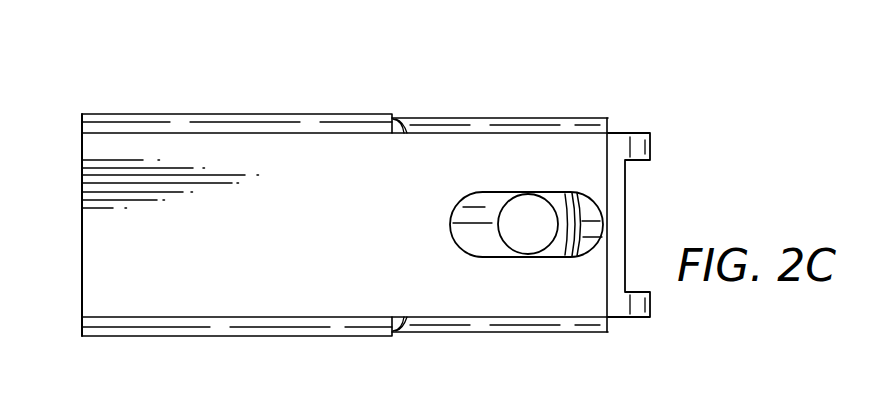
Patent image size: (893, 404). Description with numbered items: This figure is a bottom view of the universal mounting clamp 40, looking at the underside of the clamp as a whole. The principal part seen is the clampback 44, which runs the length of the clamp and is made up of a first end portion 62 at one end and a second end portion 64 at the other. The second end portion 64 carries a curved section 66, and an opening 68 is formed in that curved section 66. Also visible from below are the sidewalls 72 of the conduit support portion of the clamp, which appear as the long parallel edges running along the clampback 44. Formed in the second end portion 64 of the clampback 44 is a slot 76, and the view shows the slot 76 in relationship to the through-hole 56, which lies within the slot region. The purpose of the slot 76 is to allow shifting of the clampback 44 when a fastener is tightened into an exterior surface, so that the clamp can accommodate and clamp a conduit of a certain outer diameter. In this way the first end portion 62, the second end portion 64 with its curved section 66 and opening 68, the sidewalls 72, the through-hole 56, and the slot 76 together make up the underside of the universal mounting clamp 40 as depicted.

The universal mounting clamp 40 is at (56, 151).
The clampback 44 is at (355, 114).
The through-hole 56 is at (500, 242).
The first end portion 62 is at (84, 215).
The second end portion 64 is at (580, 142).
The curved section 66 is at (638, 133).
The opening 68 is at (634, 223).
The sidewalls 72 is at (273, 113).
The slot 76 is at (552, 253).